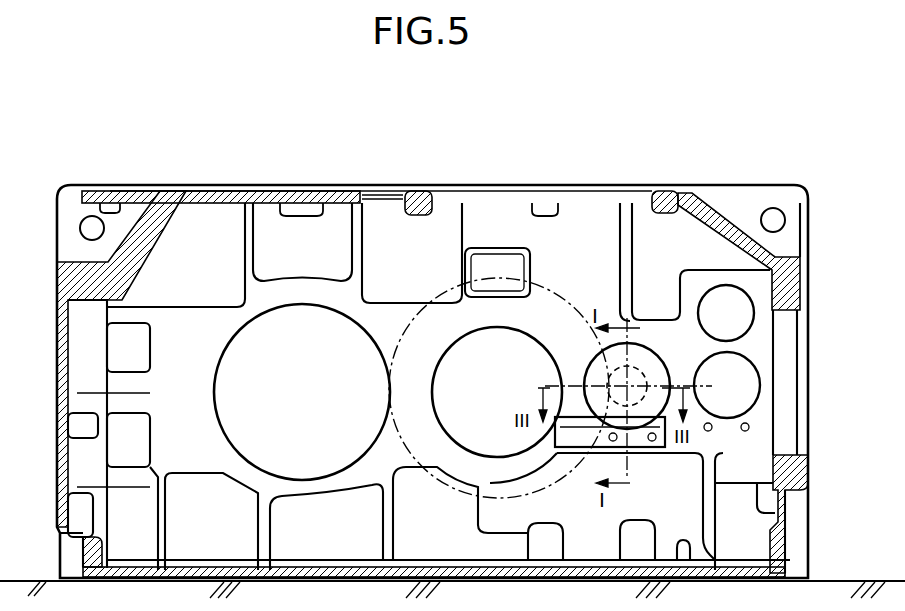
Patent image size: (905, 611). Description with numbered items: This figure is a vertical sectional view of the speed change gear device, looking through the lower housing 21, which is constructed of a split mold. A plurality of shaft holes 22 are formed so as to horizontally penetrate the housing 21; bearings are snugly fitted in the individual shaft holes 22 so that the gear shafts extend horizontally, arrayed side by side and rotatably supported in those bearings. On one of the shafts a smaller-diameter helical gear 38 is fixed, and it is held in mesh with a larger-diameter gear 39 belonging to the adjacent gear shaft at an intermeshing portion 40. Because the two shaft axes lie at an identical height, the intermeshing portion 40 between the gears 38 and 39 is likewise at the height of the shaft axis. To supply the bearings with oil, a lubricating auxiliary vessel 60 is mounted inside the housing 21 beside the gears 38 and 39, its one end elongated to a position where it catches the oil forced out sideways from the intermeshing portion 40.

The housing 21 is at (810, 484).
The shaft holes 22 is at (217, 372).
The gear 38 is at (635, 366).
The gear 39 is at (580, 313).
The intermeshing portion 40 is at (600, 383).
The lubricating auxiliary vessel 60 is at (639, 446).